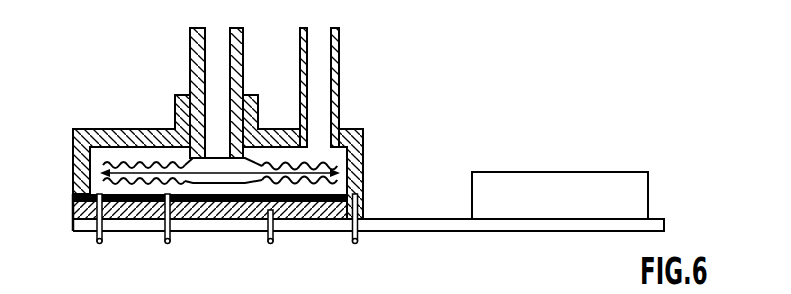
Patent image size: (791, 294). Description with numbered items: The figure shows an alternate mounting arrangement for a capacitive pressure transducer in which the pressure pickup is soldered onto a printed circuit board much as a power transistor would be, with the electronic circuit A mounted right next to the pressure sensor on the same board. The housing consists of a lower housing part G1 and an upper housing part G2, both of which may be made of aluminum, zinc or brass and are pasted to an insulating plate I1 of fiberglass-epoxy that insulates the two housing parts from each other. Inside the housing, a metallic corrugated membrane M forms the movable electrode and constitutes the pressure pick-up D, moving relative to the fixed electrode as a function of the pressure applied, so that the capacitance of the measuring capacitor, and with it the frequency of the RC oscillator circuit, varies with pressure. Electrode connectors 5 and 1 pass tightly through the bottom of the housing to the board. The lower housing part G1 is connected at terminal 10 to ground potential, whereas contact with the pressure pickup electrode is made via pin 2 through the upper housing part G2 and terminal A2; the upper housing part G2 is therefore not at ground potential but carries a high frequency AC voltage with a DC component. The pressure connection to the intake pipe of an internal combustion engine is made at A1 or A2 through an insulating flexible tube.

The terminal A2 is at (216, 93).
The pressure connection A1 is at (319, 87).
The corrugated membrane M is at (190, 167).
The pressure pick-up D is at (322, 156).
The upper housing part G2 is at (85, 165).
The lower housing part G1 is at (85, 210).
The insulating plate I1 is at (363, 196).
The electronic circuit A is at (548, 183).
The electrode connector 5 is at (102, 245).
The electrode connector 1 is at (170, 245).
The ground terminal 10 is at (274, 245).
The contact pin 2 is at (359, 245).